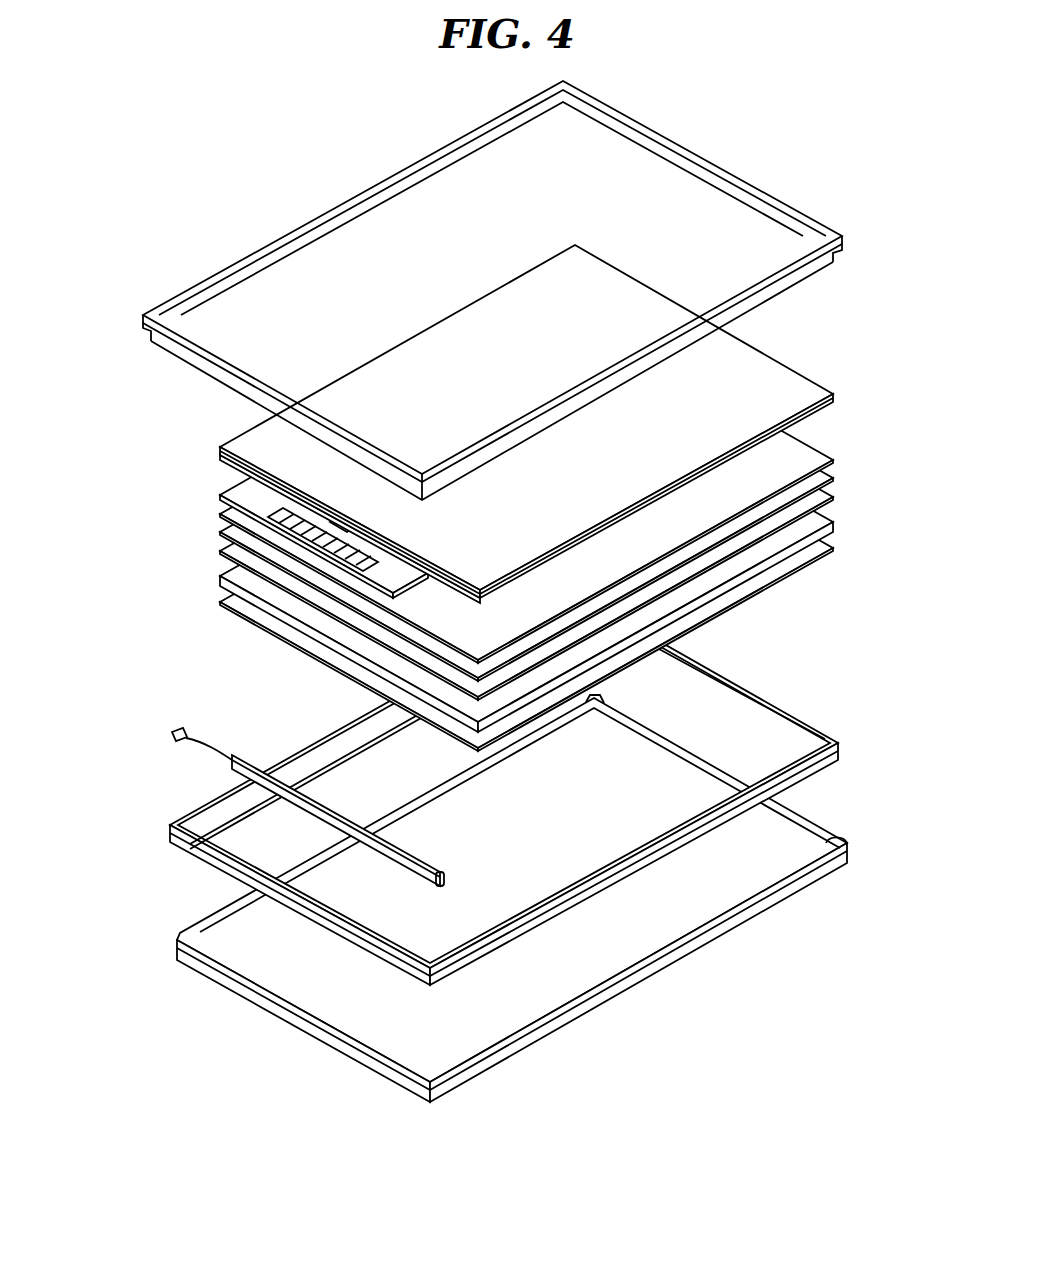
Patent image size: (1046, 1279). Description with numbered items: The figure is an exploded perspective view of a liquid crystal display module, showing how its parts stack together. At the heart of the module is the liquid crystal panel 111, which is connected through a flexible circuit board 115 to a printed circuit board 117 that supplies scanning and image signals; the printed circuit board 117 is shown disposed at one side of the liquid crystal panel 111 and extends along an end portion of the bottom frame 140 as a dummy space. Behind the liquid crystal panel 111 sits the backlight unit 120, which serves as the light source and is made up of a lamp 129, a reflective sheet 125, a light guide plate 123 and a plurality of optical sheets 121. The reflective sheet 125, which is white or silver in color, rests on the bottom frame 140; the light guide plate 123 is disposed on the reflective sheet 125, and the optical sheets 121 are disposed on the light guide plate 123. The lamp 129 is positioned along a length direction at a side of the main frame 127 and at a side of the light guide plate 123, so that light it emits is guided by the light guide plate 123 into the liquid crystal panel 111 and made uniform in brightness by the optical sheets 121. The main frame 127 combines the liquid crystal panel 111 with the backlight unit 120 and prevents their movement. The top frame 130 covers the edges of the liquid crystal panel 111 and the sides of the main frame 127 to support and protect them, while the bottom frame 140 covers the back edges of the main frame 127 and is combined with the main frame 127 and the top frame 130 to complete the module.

The top frame 130 is at (816, 210).
The liquid crystal panel 111 is at (795, 383).
The flexible circuit board 115 is at (218, 448).
The printed circuit board 117 is at (233, 485).
The backlight unit 120 is at (498, 649).
The optical sheets 121 is at (492, 507).
The light guide plate 123 is at (218, 575).
The reflective sheet 125 is at (220, 603).
The main frame 127 is at (843, 742).
The lamp 129 is at (163, 705).
The bottom frame 140 is at (845, 850).